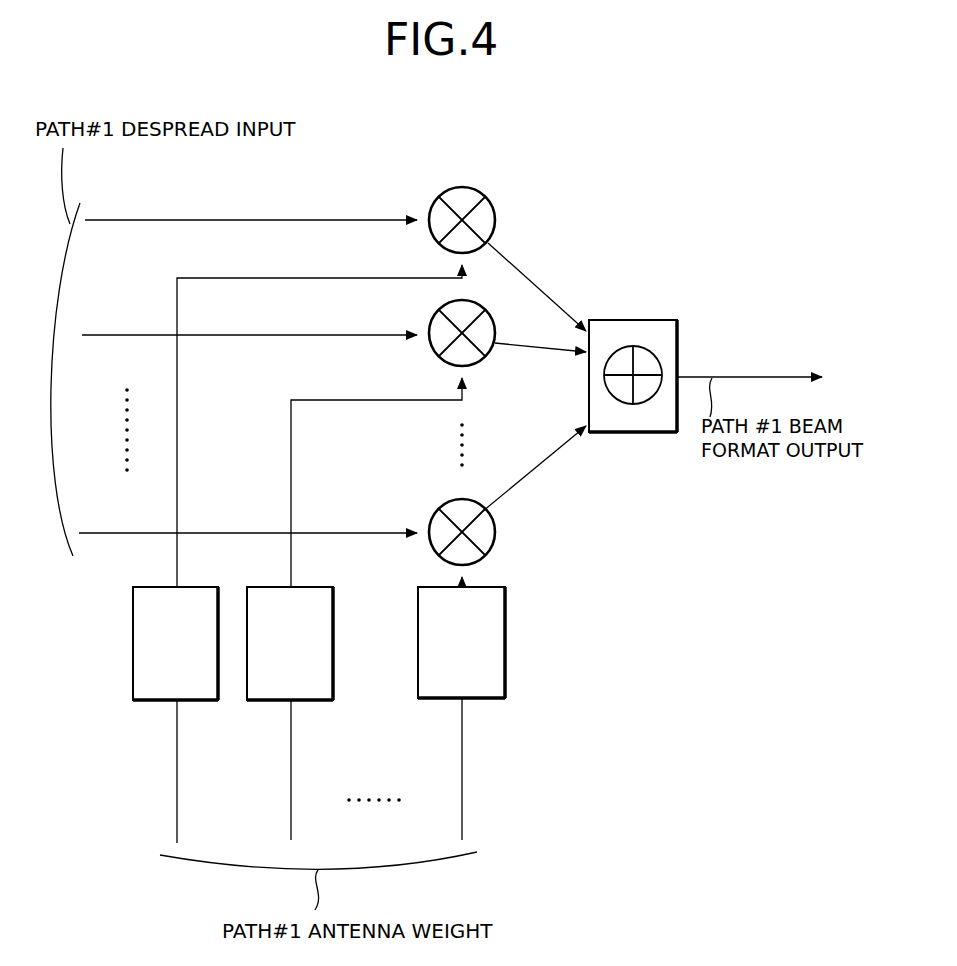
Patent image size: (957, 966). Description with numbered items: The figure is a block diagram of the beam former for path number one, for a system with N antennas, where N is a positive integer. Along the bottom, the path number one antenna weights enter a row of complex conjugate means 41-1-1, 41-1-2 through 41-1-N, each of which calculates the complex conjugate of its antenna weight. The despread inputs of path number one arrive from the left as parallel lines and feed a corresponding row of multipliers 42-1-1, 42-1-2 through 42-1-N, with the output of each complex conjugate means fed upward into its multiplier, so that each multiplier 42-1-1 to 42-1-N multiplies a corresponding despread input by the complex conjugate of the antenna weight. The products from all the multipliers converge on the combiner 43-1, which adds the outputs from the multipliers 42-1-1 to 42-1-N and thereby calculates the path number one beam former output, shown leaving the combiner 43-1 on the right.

The multiplier 42-1-1 is at (495, 205).
The multiplier 42-1-2 is at (432, 352).
The multiplier 42-1-N is at (495, 522).
The combiner 43-1 is at (625, 320).
The complex conjugate means 41-1-1 is at (142, 702).
The complex conjugate means 41-1-2 is at (310, 702).
The complex conjugate means 41-1-N is at (505, 600).